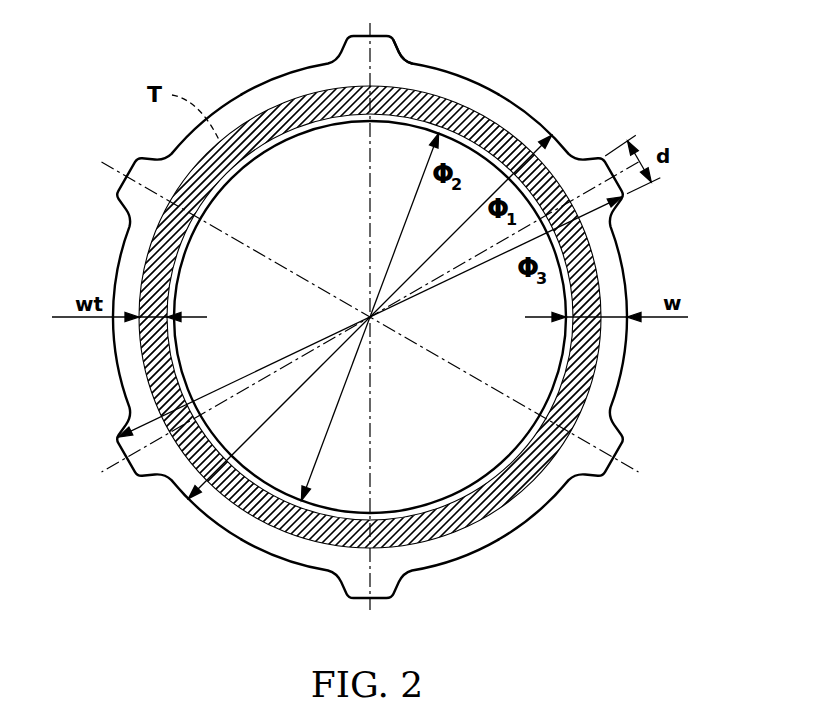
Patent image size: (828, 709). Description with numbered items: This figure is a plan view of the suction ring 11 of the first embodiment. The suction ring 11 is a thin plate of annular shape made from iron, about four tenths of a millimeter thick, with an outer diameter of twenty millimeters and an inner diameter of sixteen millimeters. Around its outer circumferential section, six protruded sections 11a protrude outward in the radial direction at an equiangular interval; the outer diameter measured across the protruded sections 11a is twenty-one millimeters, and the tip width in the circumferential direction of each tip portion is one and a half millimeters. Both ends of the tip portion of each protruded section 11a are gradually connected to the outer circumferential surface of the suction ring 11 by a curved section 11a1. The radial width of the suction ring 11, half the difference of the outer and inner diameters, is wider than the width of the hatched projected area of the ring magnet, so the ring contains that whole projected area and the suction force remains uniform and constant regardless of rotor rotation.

The suction ring 11 is at (503, 104).
The protruded section 11a is at (350, 37).
The curved section 11a1 is at (400, 54).